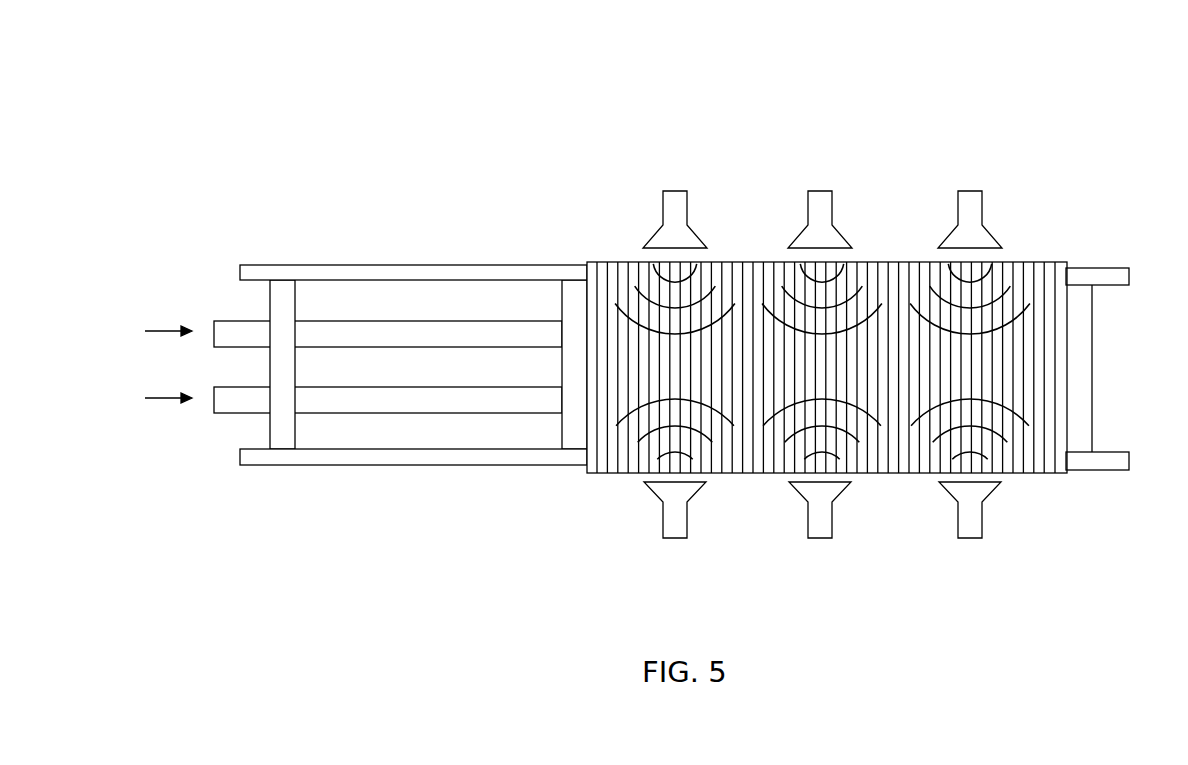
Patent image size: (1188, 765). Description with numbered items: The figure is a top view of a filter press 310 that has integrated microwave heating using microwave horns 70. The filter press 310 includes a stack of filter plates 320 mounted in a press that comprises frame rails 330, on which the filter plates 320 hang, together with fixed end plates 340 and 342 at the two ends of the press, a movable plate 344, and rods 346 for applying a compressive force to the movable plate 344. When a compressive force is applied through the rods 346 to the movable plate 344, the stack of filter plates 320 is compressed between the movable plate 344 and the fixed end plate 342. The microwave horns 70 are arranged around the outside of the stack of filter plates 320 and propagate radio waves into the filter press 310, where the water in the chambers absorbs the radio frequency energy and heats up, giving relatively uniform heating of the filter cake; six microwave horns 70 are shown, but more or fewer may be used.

The filter press 310 is at (537, 146).
The microwave horns 70 is at (805, 223).
The filter plates 320 is at (607, 458).
The frame rails 330 is at (428, 270).
The fixed end plate 340 is at (278, 302).
The fixed end plate 342 is at (1082, 407).
The movable plate 344 is at (572, 313).
The rods 346 is at (248, 400).